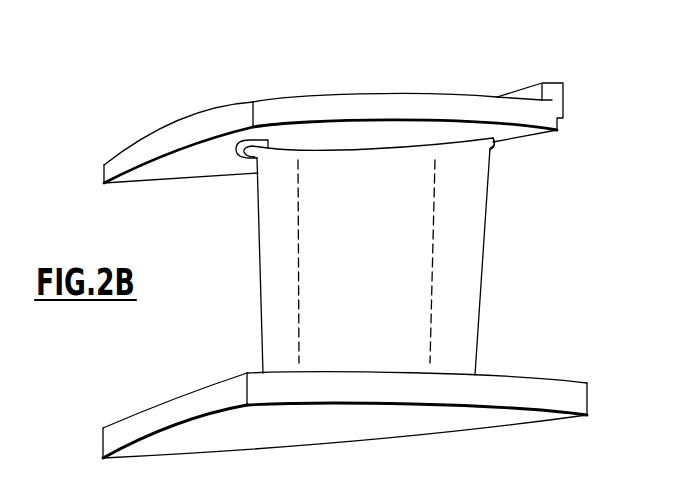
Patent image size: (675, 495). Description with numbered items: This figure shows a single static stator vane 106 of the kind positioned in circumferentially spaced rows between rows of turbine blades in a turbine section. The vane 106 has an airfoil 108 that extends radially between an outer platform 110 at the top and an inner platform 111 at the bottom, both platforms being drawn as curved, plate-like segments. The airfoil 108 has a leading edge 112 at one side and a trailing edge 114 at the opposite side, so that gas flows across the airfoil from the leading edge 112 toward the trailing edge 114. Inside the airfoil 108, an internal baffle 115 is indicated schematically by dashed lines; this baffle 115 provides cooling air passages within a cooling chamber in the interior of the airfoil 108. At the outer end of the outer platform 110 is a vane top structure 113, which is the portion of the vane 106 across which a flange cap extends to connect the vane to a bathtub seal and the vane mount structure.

The stator vane 106 is at (139, 351).
The airfoil 108 is at (442, 270).
The outer platform 110 is at (308, 108).
The inner platform 111 is at (263, 393).
The leading edge 112 is at (250, 180).
The vane top structure 113 is at (552, 93).
The trailing edge 114 is at (491, 176).
The internal baffle 115 is at (333, 253).